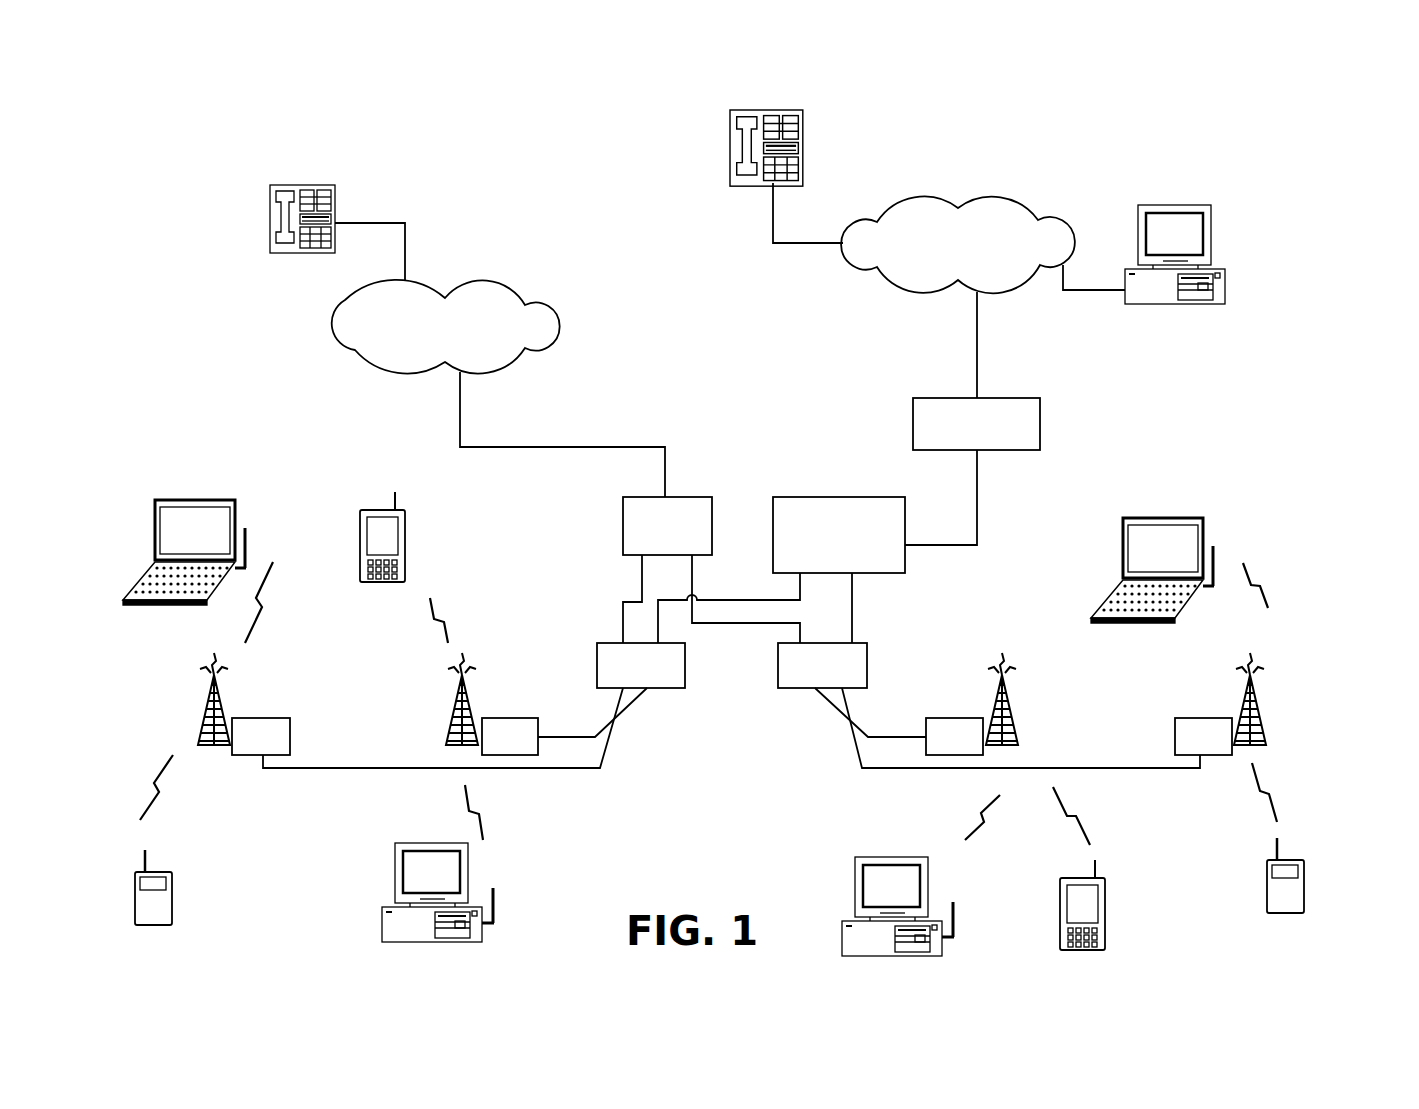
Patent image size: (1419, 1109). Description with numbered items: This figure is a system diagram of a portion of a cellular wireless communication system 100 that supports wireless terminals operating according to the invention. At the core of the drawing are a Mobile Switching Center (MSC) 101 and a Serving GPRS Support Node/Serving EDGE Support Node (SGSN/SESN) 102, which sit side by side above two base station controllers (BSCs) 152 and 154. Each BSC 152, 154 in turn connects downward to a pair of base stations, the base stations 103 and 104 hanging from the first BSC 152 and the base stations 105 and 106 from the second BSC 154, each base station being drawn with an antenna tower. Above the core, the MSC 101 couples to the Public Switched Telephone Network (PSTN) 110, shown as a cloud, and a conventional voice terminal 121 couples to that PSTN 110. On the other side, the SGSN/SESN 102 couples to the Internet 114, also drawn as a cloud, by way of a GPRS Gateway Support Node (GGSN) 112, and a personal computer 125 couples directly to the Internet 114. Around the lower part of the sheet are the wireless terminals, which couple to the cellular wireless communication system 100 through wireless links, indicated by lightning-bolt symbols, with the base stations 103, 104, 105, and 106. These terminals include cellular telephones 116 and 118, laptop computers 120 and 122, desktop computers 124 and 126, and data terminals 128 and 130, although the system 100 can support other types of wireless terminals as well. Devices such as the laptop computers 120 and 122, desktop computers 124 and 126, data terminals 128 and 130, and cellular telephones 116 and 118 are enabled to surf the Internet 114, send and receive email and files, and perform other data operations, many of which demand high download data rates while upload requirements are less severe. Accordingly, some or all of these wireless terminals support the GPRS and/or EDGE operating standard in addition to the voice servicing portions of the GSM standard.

The cellular wireless communication system 100 is at (1288, 376).
The Mobile Switching Center (MSC) 101 is at (673, 497).
The Serving GPRS Support Node/Serving EDGE Support Node (SGSN/SESN) 102 is at (822, 497).
The base station 103 is at (273, 718).
The base station 104 is at (520, 718).
The base station 105 is at (945, 718).
The base station 106 is at (1190, 718).
The Public Switched Telephone Network (PSTN) 110 is at (502, 283).
The GPRS Gateway Support Node (GGSN) 112 is at (1002, 398).
The Internet 114 is at (1017, 200).
The cellular telephone 116 is at (172, 897).
The cellular telephone 118 is at (1303, 886).
The laptop computer 120 is at (203, 500).
The conventional voice terminal 121 is at (305, 185).
The laptop computer 122 is at (798, 110).
The desktop computer 124 is at (468, 873).
The personal computer 125 is at (1212, 235).
The desktop computer 126 is at (930, 885).
The data terminal 128 is at (1107, 928).
The data terminal 130 is at (405, 560).
The base station controller (BSC) 152 is at (606, 643).
The base station controller (BSC) 154 is at (860, 643).